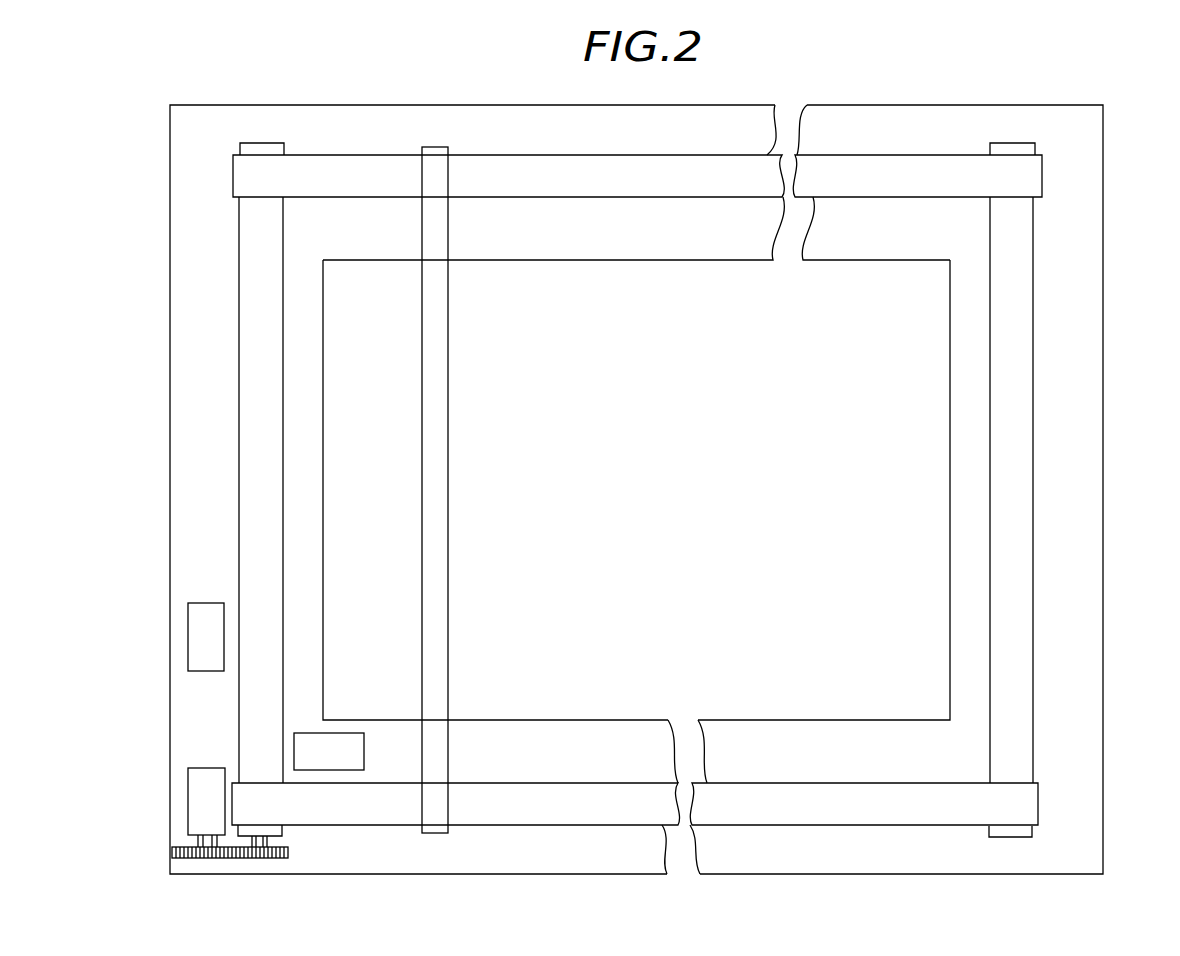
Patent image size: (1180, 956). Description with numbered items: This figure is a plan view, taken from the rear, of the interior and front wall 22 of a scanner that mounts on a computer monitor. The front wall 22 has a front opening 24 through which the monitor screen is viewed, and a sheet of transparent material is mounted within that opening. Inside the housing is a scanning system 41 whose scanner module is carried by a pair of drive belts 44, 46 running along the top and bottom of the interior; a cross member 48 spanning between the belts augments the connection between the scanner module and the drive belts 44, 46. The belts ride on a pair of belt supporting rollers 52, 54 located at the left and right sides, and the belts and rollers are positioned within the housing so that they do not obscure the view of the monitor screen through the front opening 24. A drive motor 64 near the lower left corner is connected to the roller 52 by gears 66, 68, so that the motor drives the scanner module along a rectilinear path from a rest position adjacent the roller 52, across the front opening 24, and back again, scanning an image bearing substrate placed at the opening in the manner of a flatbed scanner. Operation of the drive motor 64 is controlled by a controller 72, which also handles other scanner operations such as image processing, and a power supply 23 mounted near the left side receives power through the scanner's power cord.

The front wall 22 is at (1068, 528).
The power supply 23 is at (198, 637).
The front opening 24 is at (877, 262).
The scanning system 41 is at (580, 439).
The drive belt 44 is at (365, 172).
The drive belt 46 is at (565, 810).
The cross member 48 is at (435, 389).
The belt supporting roller 52 is at (258, 431).
The belt supporting roller 54 is at (1013, 240).
The drive motor 64 is at (203, 780).
The gear 66 is at (173, 853).
The gear 68 is at (270, 855).
The controller 72 is at (322, 744).